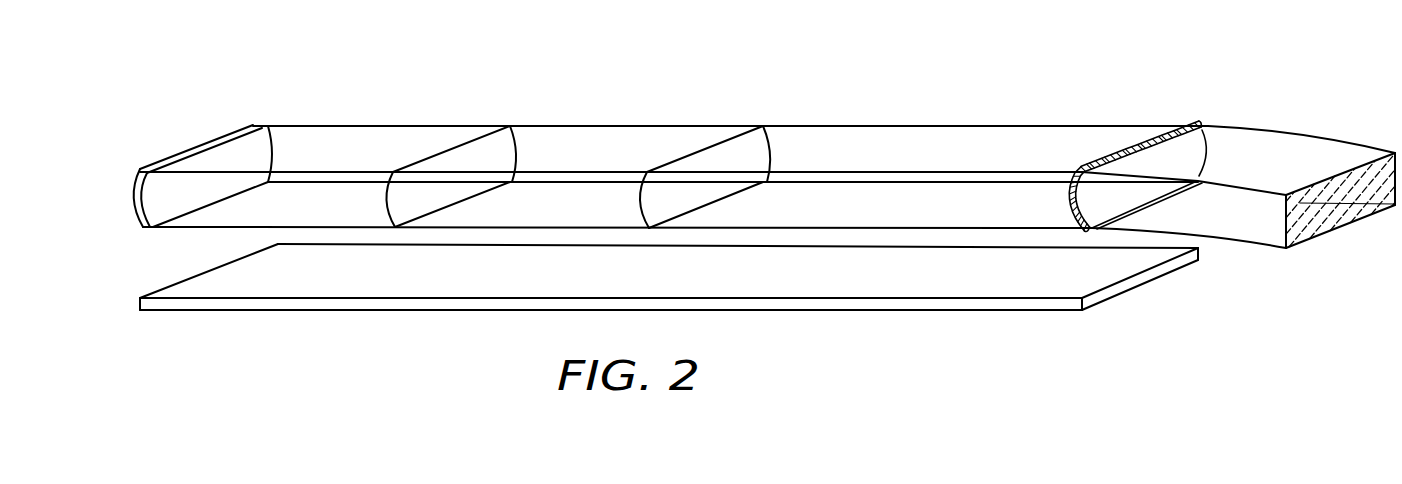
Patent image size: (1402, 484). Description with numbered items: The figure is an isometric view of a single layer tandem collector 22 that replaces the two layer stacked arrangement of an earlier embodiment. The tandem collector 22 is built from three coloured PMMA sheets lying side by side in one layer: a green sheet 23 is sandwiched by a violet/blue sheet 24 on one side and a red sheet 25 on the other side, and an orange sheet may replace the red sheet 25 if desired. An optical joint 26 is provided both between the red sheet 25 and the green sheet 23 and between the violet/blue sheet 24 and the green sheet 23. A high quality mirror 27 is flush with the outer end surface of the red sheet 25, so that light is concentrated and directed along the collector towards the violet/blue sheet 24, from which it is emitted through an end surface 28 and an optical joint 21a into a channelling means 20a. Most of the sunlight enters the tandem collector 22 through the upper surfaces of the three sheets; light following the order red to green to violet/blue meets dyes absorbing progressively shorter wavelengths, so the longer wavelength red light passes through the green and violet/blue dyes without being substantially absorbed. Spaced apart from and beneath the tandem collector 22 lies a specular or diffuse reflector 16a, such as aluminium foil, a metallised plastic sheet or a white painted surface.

The reflector 16a is at (447, 313).
The channelling means 20a is at (1277, 150).
The optical joint 21a is at (1143, 133).
The tandem collector 22 is at (840, 107).
The green sheet 23 is at (618, 140).
The violet/blue sheet 24 is at (985, 142).
The red sheet 25 is at (363, 142).
The optical joint 26 is at (463, 142).
The mirror 27 is at (133, 218).
The end surface 28 is at (1065, 208).